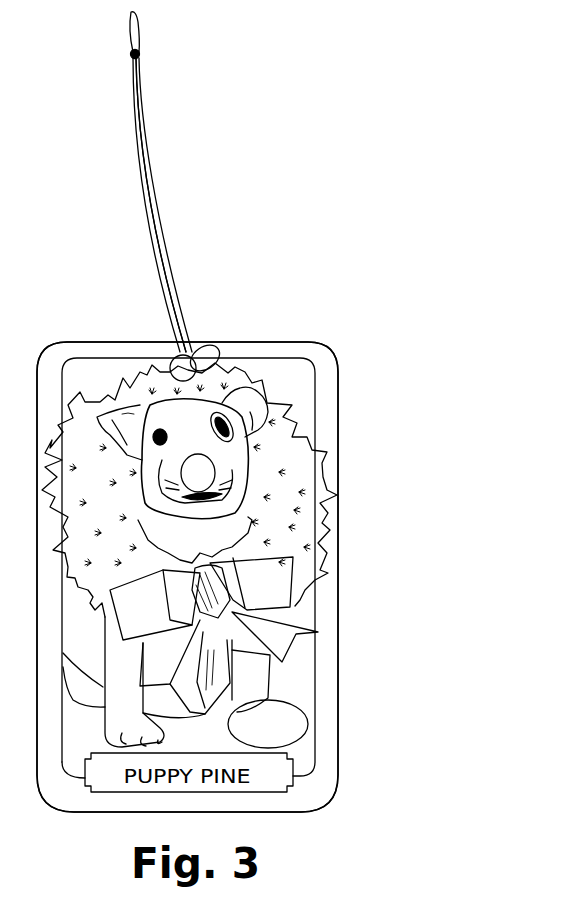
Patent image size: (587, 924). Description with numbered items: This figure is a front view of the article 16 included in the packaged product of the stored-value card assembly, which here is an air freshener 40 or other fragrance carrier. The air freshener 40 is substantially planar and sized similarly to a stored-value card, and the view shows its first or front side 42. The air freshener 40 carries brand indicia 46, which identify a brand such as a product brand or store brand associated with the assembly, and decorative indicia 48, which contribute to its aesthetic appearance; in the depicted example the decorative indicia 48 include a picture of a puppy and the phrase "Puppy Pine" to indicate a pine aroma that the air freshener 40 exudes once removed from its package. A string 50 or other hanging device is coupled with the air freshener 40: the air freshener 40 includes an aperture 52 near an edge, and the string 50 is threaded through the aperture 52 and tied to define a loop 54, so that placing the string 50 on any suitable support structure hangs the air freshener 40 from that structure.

The article 16 is at (337, 324).
The air freshener 40 is at (338, 361).
The front side 42 is at (326, 612).
The brand indicia 46 is at (306, 729).
The decorative indicia 48 is at (298, 495).
The string 50 is at (167, 233).
The aperture 52 is at (208, 358).
The loop 54 is at (155, 262).